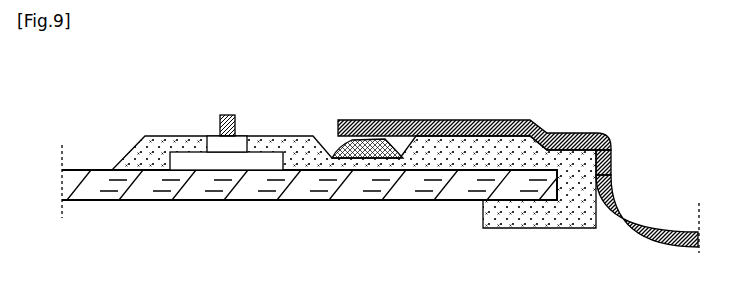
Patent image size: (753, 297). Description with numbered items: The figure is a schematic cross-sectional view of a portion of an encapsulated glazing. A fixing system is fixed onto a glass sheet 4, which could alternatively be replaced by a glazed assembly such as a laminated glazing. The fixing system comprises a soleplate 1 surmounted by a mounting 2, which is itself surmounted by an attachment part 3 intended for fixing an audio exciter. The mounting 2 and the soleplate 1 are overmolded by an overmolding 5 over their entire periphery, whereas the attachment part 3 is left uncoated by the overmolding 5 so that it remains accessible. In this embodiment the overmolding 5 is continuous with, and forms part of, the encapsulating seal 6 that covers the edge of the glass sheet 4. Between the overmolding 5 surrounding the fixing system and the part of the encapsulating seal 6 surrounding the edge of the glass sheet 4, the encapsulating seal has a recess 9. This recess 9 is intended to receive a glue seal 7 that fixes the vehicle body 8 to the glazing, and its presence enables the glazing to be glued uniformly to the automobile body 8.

The soleplate 1 is at (132, 150).
The mounting 2 is at (242, 146).
The attachment part 3 is at (217, 132).
The glass sheet 4 is at (167, 200).
The overmolding 5 is at (168, 152).
The encapsulating seal 6 is at (613, 162).
The glue seal 7 is at (355, 120).
The vehicle body 8 is at (632, 207).
The recess 9 is at (358, 142).